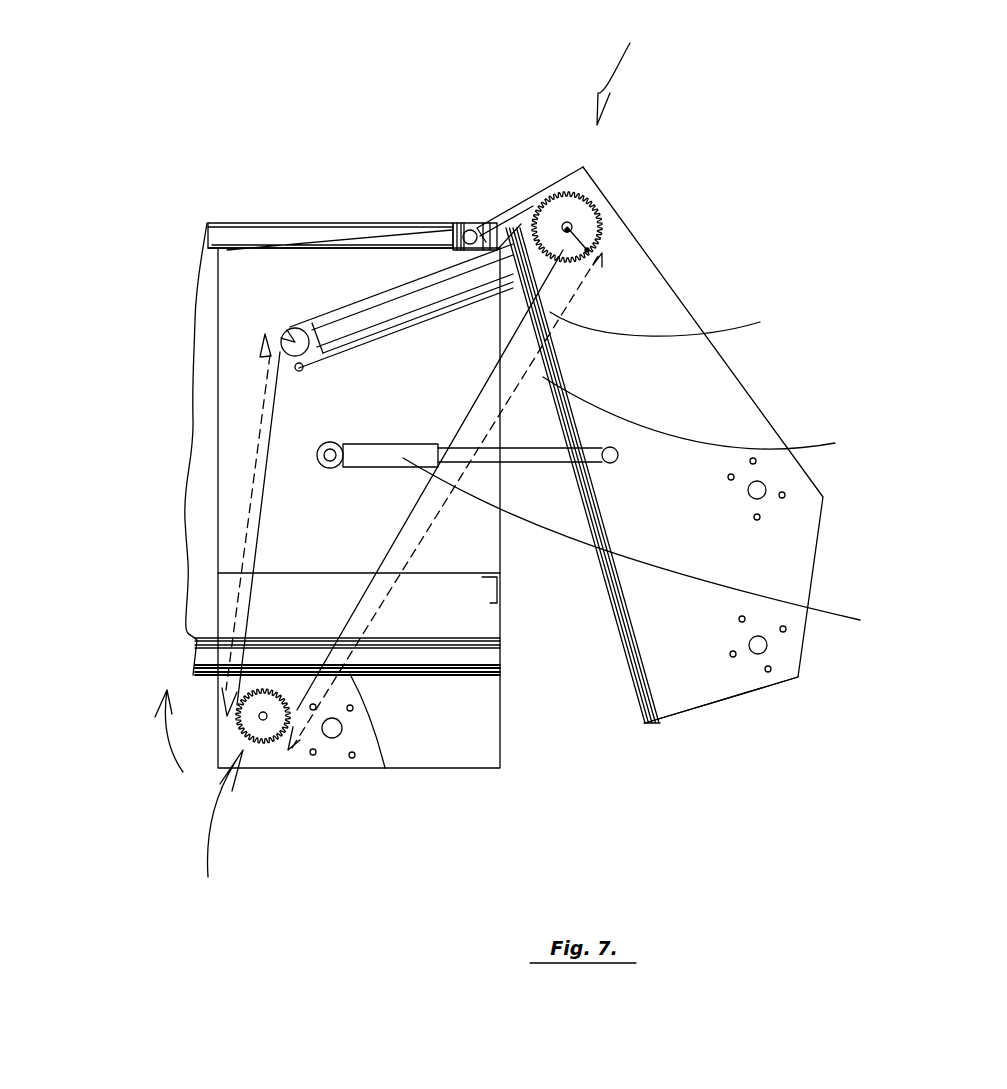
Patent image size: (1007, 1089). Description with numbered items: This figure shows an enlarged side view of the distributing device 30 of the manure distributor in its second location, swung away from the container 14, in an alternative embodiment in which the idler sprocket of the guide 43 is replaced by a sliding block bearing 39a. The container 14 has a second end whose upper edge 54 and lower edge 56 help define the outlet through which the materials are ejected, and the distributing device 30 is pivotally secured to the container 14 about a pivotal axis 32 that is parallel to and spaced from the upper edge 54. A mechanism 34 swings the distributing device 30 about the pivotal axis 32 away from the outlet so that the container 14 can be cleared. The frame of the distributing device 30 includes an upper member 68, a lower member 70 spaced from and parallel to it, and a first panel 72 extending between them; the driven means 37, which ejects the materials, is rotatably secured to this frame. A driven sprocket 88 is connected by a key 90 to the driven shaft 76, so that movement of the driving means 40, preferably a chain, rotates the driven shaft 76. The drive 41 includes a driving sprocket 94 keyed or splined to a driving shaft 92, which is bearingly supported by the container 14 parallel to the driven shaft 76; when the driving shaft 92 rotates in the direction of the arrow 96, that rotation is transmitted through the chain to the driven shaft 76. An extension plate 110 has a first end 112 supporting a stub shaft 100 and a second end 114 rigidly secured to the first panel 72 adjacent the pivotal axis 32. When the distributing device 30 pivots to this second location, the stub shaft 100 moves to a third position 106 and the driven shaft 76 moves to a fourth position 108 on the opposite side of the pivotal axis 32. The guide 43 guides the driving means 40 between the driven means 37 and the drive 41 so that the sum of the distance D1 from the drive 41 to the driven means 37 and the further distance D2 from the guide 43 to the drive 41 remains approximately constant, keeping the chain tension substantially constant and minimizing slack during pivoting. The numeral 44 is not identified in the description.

The container 14 is at (342, 534).
The guide 43 is at (252, 270).
The sliding block bearing 39a is at (280, 337).
The first end of extension plate 112 is at (258, 340).
The third position 106 is at (277, 340).
The stub shaft 100 is at (297, 328).
The pivot arm 44 is at (390, 278).
The extension plate 110 is at (342, 306).
The pivotal axis 32 is at (471, 228).
The second end of extension plate 114 is at (513, 215).
The upper member 68 is at (550, 180).
The driven means 37 is at (626, 71).
The driven shaft 76 is at (573, 223).
The fourth position 108 is at (570, 226).
The key 90 is at (570, 232).
The driven sprocket 88 is at (565, 243).
The driving means 40 is at (760, 322).
The first panel 72 is at (627, 394).
The distributing device 30 is at (728, 673).
The lower member 70 is at (700, 710).
The upper edge 54 is at (835, 443).
The mechanism 34 is at (647, 544).
The driving sprocket 94 is at (250, 680).
The distance D1 is at (437, 522).
The further distance D2 is at (240, 580).
The arrow 96 is at (163, 733).
The lower edge 56 is at (500, 713).
The driving shaft 92 is at (263, 720).
The drive 41 is at (218, 833).